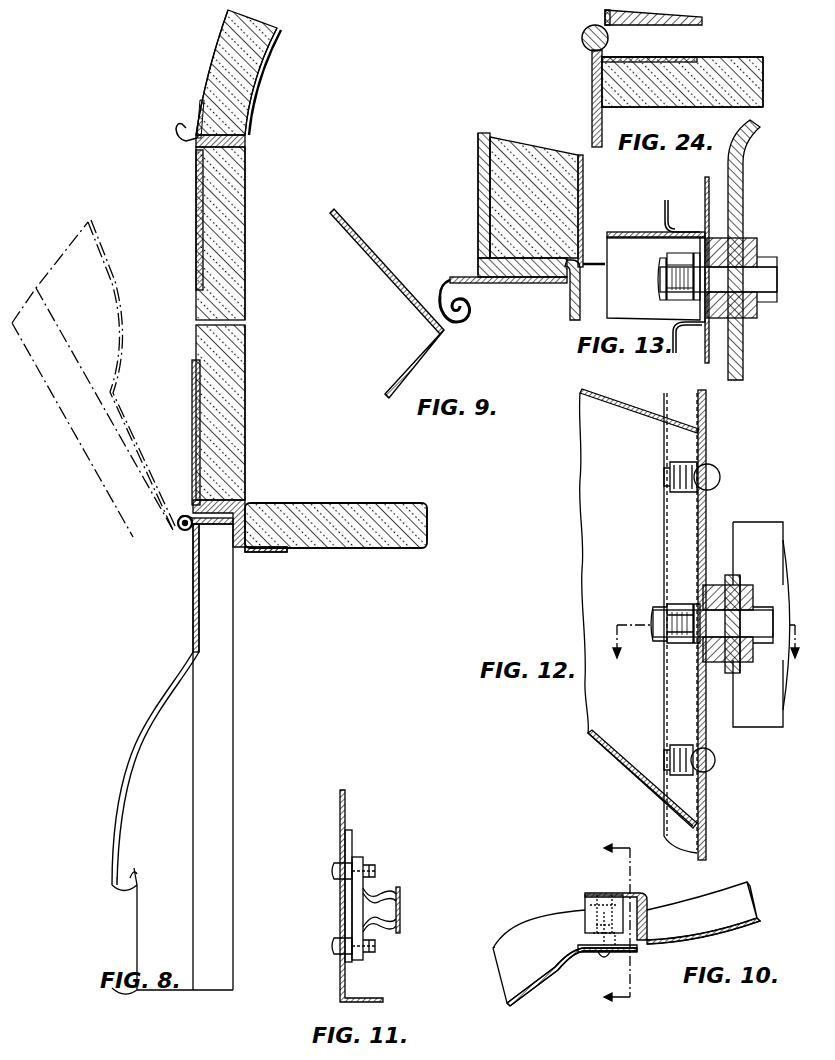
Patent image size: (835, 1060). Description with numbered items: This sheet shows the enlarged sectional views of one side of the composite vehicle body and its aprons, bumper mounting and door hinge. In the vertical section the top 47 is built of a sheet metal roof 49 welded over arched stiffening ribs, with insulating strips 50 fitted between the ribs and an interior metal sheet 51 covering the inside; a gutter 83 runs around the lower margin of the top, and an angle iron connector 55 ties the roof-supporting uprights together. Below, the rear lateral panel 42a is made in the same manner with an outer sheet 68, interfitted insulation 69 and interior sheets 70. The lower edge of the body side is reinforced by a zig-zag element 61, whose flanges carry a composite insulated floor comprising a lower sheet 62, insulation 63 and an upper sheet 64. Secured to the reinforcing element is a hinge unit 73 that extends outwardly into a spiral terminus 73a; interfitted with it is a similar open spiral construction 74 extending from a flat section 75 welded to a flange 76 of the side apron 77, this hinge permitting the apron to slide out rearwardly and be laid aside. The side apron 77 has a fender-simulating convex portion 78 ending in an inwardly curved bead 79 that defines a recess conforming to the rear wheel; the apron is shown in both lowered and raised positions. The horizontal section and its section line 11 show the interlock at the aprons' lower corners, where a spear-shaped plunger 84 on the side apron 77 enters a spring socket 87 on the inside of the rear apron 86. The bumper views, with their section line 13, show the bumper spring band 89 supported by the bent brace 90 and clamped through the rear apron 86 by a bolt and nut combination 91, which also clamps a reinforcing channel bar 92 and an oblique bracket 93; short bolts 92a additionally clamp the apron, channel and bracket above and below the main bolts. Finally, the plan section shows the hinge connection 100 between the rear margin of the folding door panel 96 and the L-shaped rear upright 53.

In FIG. 8, the top 47 is at (225, 32).
In FIG. 8, the sheet metal roof 49 is at (214, 56).
In FIG. 8, the insulating strips 50 is at (266, 22).
In FIG. 8, the interior metal sheet 51 is at (258, 68).
In FIG. 24, the rear upright 53 is at (686, 58).
In FIG. 8, the angle iron connector 55 is at (196, 108).
In FIG. 8, the zig-zag reinforcing element 61 is at (192, 404).
In FIG. 9, the zig-zag reinforcing element 61 is at (490, 136).
In FIG. 8, the lower floor sheet 62 is at (345, 550).
In FIG. 8, the floor insulation 63 is at (429, 532).
In FIG. 8, the upper floor sheet 64 is at (351, 503).
In FIG. 9, the upper floor sheet 64 is at (592, 262).
In FIG. 8, the outer sheet 68 is at (194, 328).
In FIG. 9, the outer sheet 68 is at (477, 184).
In FIG. 24, the outer sheet 68 is at (736, 56).
In FIG. 8, the interfitted insulation 69 is at (240, 236).
In FIG. 9, the interfitted insulation 69 is at (541, 158).
In FIG. 24, the interfitted insulation 69 is at (740, 78).
In FIG. 8, the interior sheet 70 is at (247, 328).
In FIG. 9, the interior sheet 70 is at (584, 190).
In FIG. 24, the interior sheet 70 is at (692, 108).
In FIG. 8, the hinge unit 73 is at (222, 502).
In FIG. 9, the hinge unit 73 is at (515, 285).
In FIG. 8, the spiral terminus 73a is at (180, 513).
In FIG. 9, the spiral terminus 73a is at (440, 290).
In FIG. 8, the open spiral construction 74 is at (176, 526).
In FIG. 9, the open spiral construction 74 is at (470, 320).
In FIG. 8, the flat section 75 is at (212, 525).
In FIG. 9, the flat section 75 is at (430, 356).
In FIG. 8, the flange 76 is at (228, 526).
In FIG. 9, the flange 76 is at (410, 366).
In FIG. 8, the side apron 77 is at (120, 428).
In FIG. 9, the side apron 77 is at (364, 252).
In FIG. 10, the side apron 77 is at (553, 985).
In FIG. 11, the side apron 77 is at (340, 810).
In FIG. 8, the fender-simulating convex portion 78 is at (114, 290).
In FIG. 10, the fender-simulating convex portion 78 is at (507, 1010).
In FIG. 8, the inwardly curved bead 79 is at (139, 886).
In FIG. 8, the gutter 83 is at (176, 136).
In FIG. 10, the spear-shaped plunger 84 is at (585, 903).
In FIG. 11, the spear-shaped plunger 84 is at (378, 907).
In FIG. 13, the rear apron 86 is at (705, 200).
In FIG. 12, the rear apron 86 is at (708, 434).
In FIG. 10, the rear apron 86 is at (752, 926).
In FIG. 10, the spring socket 87 is at (639, 894).
In FIG. 11, the spring socket 87 is at (386, 926).
In FIG. 12, the spring band 89 is at (760, 522).
In FIG. 13, the bent brace 90 is at (746, 188).
In FIG. 12, the bent brace 90 is at (748, 683).
In FIG. 13, the bolt and nut combination 91 is at (770, 260).
In FIG. 12, the bolt and nut combination 91 is at (740, 590).
In FIG. 13, the channel bar 92 is at (681, 336).
In FIG. 12, the channel bar 92 is at (708, 512).
In FIG. 12, the short bolt 92a is at (720, 475).
In FIG. 13, the bracket 93 is at (636, 232).
In FIG. 12, the bracket 93 is at (590, 556).
In FIG. 24, the door panel 96 is at (655, 26).
In FIG. 24, the hinge connection 100 is at (582, 36).
In FIG. 10, the section line 11— 11 is at (610, 919).
In FIG. 12, the section line 13— 13 is at (707, 651).
In FIG. 8, the rear lateral panel 42a is at (195, 217).
In FIG. 9, the rear lateral panel 42a is at (478, 140).
In FIG. 24, the rear lateral panel 42a is at (755, 58).